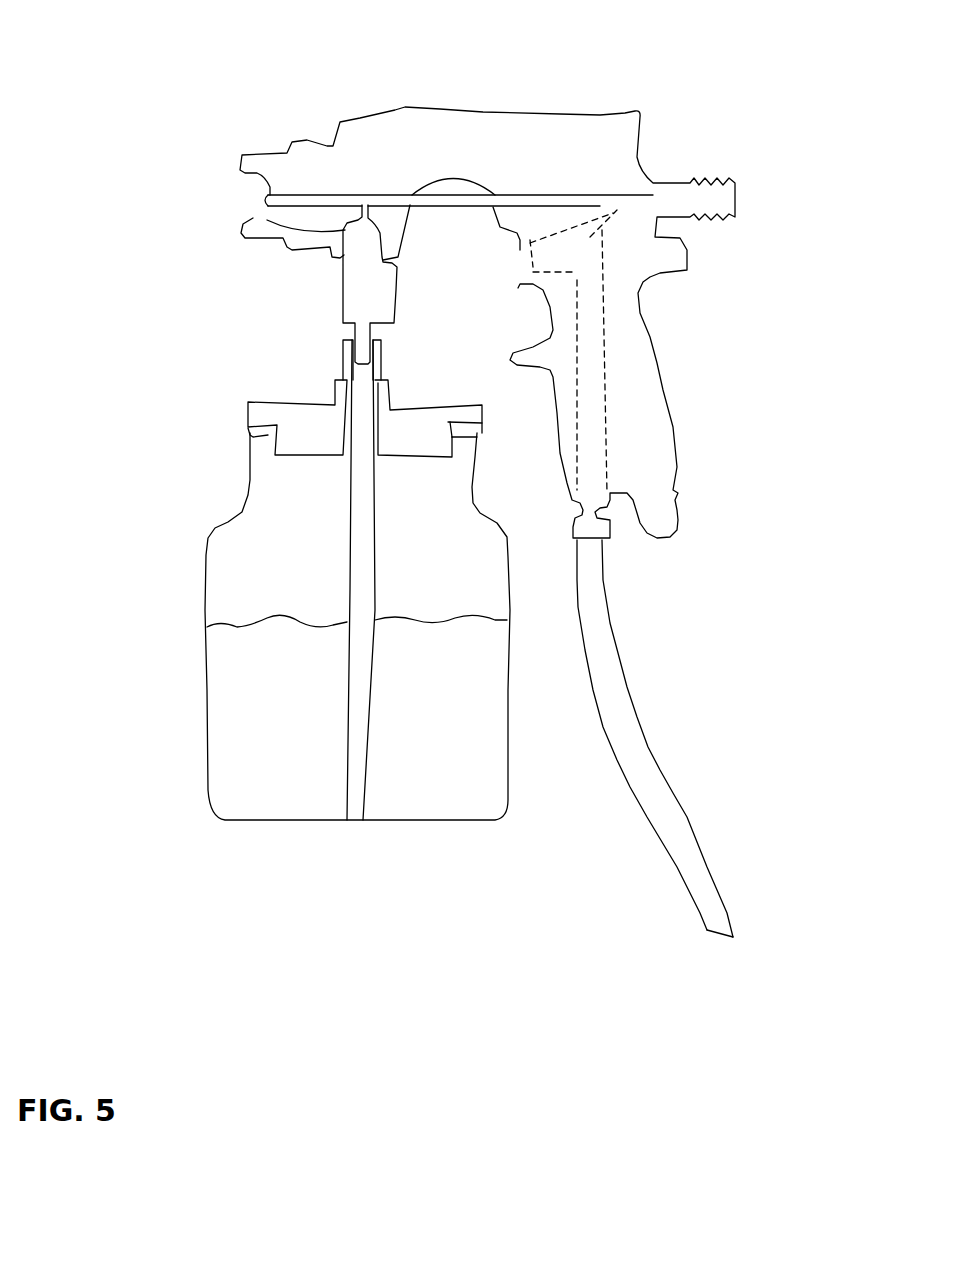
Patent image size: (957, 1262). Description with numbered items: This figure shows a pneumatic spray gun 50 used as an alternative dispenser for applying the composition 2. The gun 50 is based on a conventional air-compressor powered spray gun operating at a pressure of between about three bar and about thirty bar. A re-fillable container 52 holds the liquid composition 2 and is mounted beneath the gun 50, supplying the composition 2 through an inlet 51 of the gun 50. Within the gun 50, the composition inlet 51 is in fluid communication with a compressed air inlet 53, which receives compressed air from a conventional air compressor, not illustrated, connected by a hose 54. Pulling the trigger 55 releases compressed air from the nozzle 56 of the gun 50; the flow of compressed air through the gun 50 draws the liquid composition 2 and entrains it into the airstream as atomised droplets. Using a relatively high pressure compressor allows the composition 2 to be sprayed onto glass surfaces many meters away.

The spray gun 50 is at (138, 95).
The inlet 51 is at (253, 218).
The re-fillable container 52 is at (205, 541).
The compressed air inlet 53 is at (717, 930).
The hose 54 is at (667, 768).
The trigger 55 is at (517, 257).
The nozzle 56 is at (268, 202).
The composition 2 is at (272, 723).